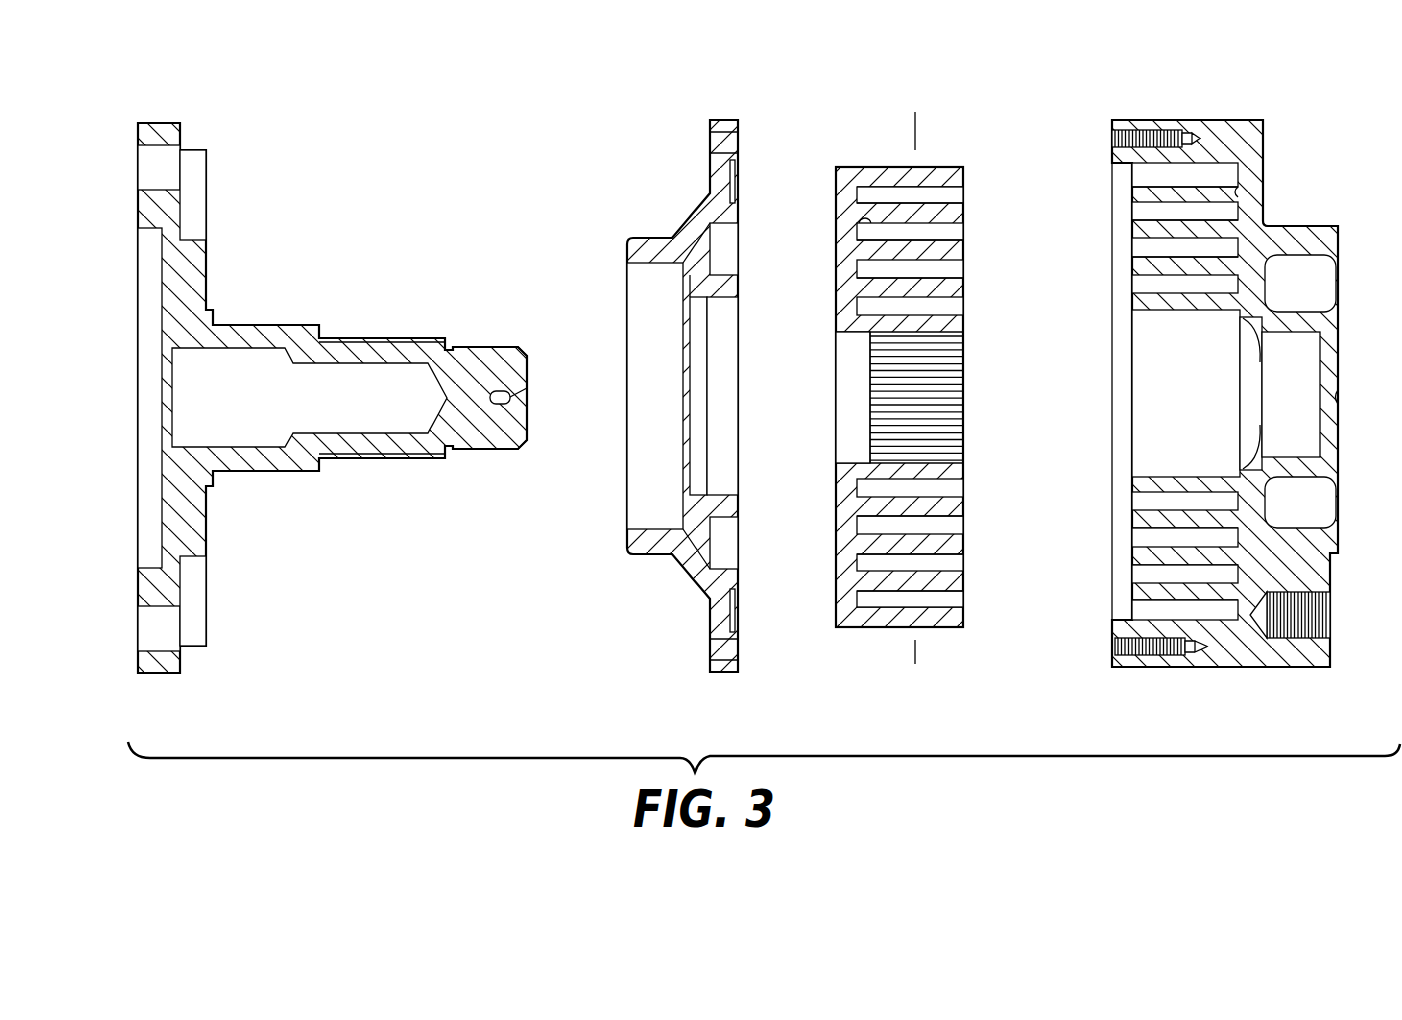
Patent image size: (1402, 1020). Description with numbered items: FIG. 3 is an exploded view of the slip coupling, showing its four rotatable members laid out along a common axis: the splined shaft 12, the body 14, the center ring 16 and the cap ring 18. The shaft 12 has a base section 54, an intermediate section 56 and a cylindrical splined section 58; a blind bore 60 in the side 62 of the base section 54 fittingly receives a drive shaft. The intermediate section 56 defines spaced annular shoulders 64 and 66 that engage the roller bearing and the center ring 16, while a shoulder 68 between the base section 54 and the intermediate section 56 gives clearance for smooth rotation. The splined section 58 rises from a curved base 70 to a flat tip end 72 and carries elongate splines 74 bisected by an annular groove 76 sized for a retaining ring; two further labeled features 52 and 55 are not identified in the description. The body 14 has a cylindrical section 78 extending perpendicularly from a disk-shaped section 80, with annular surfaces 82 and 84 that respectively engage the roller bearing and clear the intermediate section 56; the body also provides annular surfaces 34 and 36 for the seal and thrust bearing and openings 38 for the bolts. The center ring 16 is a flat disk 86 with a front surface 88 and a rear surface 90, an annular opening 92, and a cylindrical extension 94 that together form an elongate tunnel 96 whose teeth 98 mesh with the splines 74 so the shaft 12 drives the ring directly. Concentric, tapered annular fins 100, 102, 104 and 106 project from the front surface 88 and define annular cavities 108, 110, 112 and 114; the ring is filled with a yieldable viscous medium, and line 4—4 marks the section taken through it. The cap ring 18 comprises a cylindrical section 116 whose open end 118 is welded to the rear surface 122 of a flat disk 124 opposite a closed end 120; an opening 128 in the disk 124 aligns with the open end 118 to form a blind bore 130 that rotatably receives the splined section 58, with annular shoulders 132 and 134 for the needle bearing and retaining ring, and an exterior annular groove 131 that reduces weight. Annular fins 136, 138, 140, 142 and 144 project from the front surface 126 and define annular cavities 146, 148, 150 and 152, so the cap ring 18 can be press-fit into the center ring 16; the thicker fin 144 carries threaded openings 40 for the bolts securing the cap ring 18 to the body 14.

The section line 4 is at (915, 112).
The splined shaft 12 is at (244, 184).
The body 14 is at (717, 104).
The center ring 16 is at (932, 108).
The cap ring 18 is at (1192, 84).
The annular surface 34 is at (724, 320).
The annular surface 36 is at (724, 254).
The openings 38 is at (730, 135).
The threaded openings 40 is at (1116, 632).
The threaded hole 52 is at (1331, 616).
The base section 54 is at (147, 120).
The head 55 is at (488, 452).
The intermediate section 56 is at (310, 474).
The cylindrical splined section 58 is at (211, 546).
The blind bore 60 is at (147, 293).
The side 62 is at (120, 497).
The annular shoulder 64 is at (217, 320).
The annular shoulder 66 is at (321, 326).
The shoulder 68 is at (207, 286).
The curved base 70 is at (358, 338).
The flat tip end 72 is at (527, 372).
The elongate splines 74 is at (404, 338).
The annular groove 76 is at (450, 347).
The cylindrical section 78 is at (666, 224).
The disk-shaped section 80 is at (750, 164).
The annular surface 82 is at (647, 265).
The annular surface 84 is at (700, 332).
The flat disk 86 is at (850, 177).
The front surface 88 is at (858, 222).
The rear surface 90 is at (846, 286).
The annular opening 92 is at (845, 415).
The cylindrical extension 94 is at (966, 362).
The elongate tunnel 96 is at (978, 380).
The teeth 98 is at (968, 404).
The annular fin 100 is at (966, 290).
The annular fin 102 is at (968, 238).
The annular fin 104 is at (965, 195).
The annular fin 106 is at (958, 178).
The annular cavity 108 is at (966, 313).
The annular cavity 110 is at (966, 268).
The annular cavity 112 is at (968, 212).
The annular cavity 114 is at (968, 184).
The cylindrical section 116 is at (1270, 226).
The open end 118 is at (1233, 334).
The closed end 120 is at (1339, 397).
The rear surface 122 is at (1263, 158).
The flat disk 124 is at (1265, 121).
The front surface 126 is at (1240, 190).
The opening 128 is at (1235, 355).
The blind bore 130 is at (1233, 444).
The annular groove 131 is at (1322, 298).
The annular shoulder 132 is at (1270, 336).
The annular shoulder 134 is at (1252, 342).
The annular fin 136 is at (1114, 302).
The annular fin 138 is at (1132, 268).
The annular fin 140 is at (1132, 229).
The annular fin 142 is at (1132, 186).
The annular fin 144 is at (1120, 128).
The annular cavity 146 is at (1140, 290).
The annular cavity 148 is at (1140, 252).
The annular cavity 150 is at (1138, 215).
The annular cavity 152 is at (1123, 172).